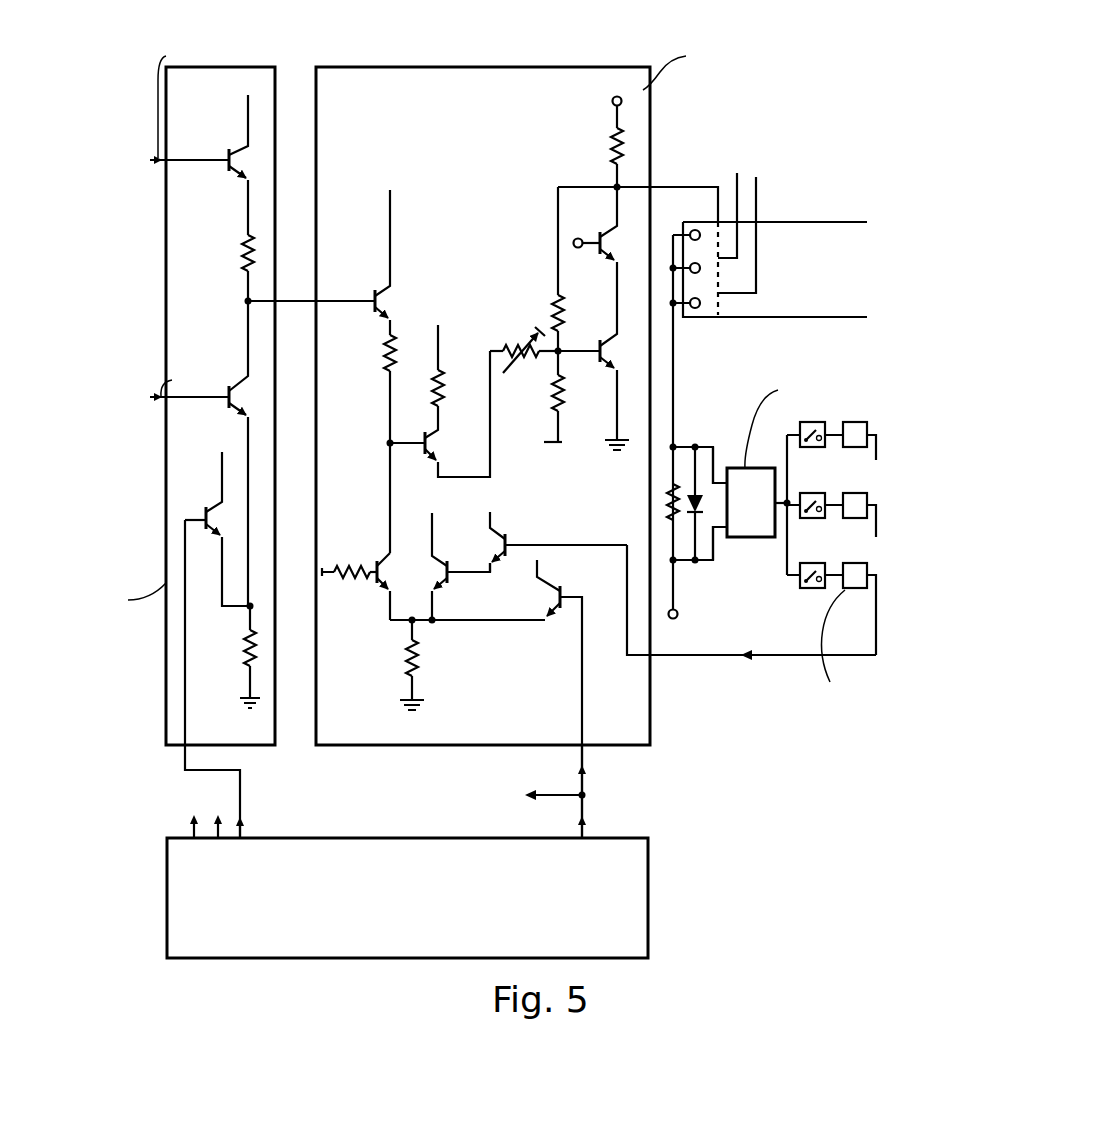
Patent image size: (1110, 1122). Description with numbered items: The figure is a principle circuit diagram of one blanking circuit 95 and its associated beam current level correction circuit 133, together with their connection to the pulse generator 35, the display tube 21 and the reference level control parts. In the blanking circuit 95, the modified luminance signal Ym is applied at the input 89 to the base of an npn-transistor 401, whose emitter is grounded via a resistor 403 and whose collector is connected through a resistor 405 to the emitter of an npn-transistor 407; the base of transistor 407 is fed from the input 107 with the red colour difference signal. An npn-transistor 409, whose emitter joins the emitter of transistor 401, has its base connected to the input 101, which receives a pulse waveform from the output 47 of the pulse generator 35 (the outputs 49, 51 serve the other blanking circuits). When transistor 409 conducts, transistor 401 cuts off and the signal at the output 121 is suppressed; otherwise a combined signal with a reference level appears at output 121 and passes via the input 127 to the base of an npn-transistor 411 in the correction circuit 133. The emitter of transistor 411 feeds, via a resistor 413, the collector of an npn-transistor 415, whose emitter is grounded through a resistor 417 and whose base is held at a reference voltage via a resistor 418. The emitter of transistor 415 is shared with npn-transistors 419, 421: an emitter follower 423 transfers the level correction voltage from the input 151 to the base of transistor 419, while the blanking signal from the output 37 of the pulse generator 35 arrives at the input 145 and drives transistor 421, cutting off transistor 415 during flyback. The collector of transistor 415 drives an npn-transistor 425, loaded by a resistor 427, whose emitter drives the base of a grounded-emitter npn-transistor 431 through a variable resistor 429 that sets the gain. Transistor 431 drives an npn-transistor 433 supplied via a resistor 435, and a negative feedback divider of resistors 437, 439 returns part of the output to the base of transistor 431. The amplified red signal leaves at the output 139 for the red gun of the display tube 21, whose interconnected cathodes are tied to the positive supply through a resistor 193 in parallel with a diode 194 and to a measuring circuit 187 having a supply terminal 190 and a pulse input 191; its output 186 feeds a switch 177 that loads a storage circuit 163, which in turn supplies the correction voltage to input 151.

The blanking circuit 95 is at (264, 746).
The npn-transistor 407 is at (228, 150).
The input 107 is at (163, 168).
The resistor 405 is at (244, 244).
The output 121 is at (277, 305).
The input 127 is at (316, 299).
The npn-transistor 401 is at (228, 388).
The input 89 is at (161, 402).
The npn-transistor 409 is at (205, 510).
The input 101 is at (186, 748).
The resistor 403 is at (246, 652).
The output 51 is at (192, 834).
The output 49 is at (218, 834).
The output 47 is at (243, 835).
The beam current level correction circuit 133 is at (364, 746).
The npn-transistor 411 is at (374, 292).
The resistor 413 is at (386, 360).
The npn-transistor 425 is at (428, 444).
The resistor 427 is at (441, 392).
The variable resistor 429 is at (505, 346).
The resistor 437 is at (553, 312).
The resistor 439 is at (566, 393).
The npn-transistor 431 is at (598, 342).
The npn-transistor 433 is at (600, 233).
The resistor 435 is at (610, 160).
The output 139 is at (651, 190).
The display tube 21 is at (802, 240).
The resistor 193 is at (678, 486).
The diode 194 is at (698, 490).
The input 191 is at (717, 480).
The input terminal 190 is at (716, 530).
The measuring circuit 187 is at (750, 490).
The output 186 is at (778, 498).
The switch 177 is at (808, 591).
The storage circuit 163 is at (850, 589).
The input 151 is at (653, 658).
The resistor 418 is at (353, 567).
The npn-transistor 415 is at (375, 562).
The resistor 417 is at (405, 661).
The npn-transistor 419 is at (456, 552).
The npn-transistor 423 is at (508, 541).
The npn-transistor 421 is at (560, 612).
The input 145 is at (580, 753).
The output 37 is at (578, 836).
The pulse generator 35 is at (625, 862).